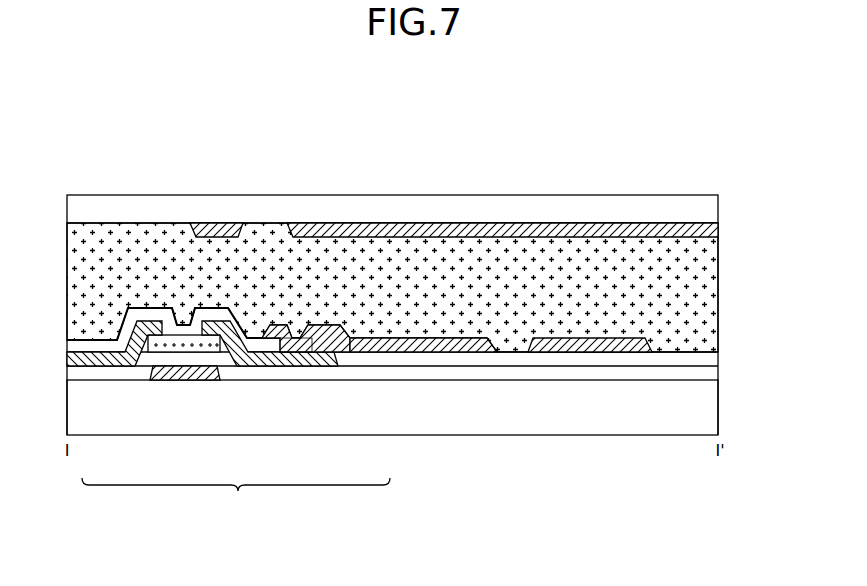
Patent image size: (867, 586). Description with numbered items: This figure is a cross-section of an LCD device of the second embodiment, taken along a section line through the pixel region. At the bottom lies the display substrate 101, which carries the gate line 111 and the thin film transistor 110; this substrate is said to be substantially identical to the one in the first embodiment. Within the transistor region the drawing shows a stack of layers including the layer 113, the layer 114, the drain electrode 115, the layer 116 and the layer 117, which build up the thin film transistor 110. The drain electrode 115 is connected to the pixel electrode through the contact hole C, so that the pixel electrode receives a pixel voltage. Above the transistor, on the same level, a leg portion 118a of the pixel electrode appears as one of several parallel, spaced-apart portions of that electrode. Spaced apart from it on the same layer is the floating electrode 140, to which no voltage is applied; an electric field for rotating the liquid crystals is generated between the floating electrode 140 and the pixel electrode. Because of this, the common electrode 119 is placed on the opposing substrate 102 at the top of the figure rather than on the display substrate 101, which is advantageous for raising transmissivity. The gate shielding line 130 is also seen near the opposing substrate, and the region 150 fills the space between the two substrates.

The display substrate 101 is at (718, 408).
The opposing substrate 102 is at (718, 208).
The thin film transistor 110 is at (236, 495).
The gate line 111 is at (194, 376).
The active layer 113 is at (158, 347).
The source electrode 114 is at (101, 363).
The drain electrode 115 is at (277, 362).
The connection electrode 116 is at (332, 373).
The passivation layer 117 is at (226, 338).
The leg portion 118a is at (473, 353).
The common electrode 119 is at (487, 223).
The gate shielding line 130 is at (216, 223).
The floating electrode 140 is at (577, 353).
The filler layer 150 is at (718, 277).
The contact hole C is at (317, 347).